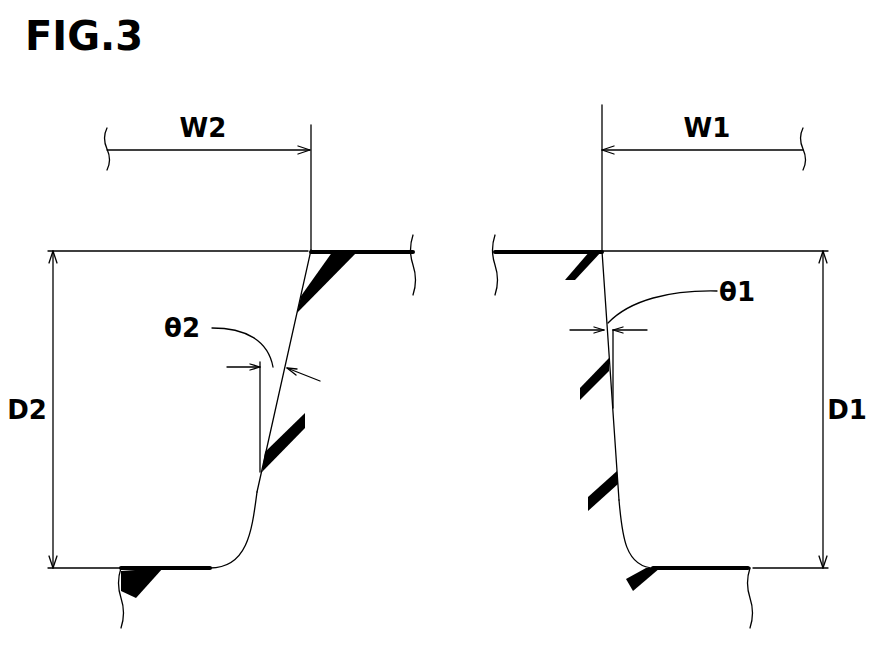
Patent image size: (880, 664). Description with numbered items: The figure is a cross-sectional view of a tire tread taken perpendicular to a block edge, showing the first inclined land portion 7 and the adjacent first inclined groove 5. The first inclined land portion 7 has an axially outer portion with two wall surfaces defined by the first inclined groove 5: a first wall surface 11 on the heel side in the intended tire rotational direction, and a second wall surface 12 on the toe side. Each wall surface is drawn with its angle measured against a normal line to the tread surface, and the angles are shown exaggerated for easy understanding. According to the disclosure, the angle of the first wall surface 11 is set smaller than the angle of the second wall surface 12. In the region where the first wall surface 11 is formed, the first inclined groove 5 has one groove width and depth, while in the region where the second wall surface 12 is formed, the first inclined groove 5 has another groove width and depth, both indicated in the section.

The first inclined groove 5 is at (192, 540).
The first inclined land portion 7 is at (324, 453).
The first wall surface 11 is at (617, 455).
The second wall surface 12 is at (292, 328).